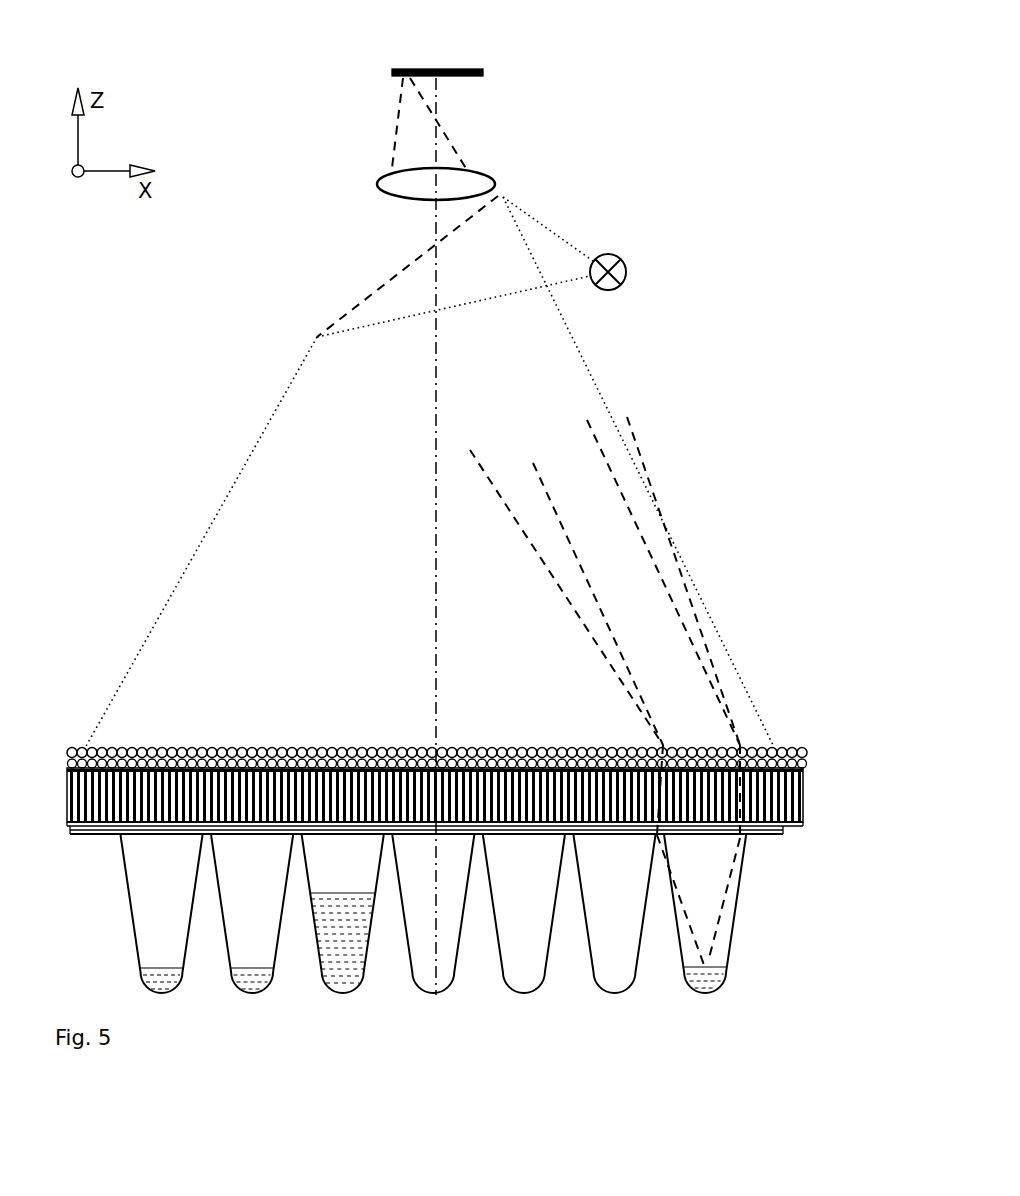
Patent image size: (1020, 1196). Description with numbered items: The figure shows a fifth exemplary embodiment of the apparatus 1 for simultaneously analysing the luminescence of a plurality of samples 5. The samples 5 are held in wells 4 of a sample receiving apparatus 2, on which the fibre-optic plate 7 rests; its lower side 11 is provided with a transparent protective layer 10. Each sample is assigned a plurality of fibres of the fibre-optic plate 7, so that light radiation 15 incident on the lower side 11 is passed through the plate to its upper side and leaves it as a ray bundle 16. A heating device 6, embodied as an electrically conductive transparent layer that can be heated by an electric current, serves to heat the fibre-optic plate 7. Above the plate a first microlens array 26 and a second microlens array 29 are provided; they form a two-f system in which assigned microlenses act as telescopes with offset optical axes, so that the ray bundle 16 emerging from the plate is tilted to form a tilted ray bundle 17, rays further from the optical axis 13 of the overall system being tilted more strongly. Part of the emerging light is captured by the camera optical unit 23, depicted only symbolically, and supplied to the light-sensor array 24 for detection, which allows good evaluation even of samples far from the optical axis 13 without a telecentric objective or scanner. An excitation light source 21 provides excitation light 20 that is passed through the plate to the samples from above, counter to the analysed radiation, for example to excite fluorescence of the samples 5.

The apparatus 1 is at (769, 42).
The sample receiving apparatus 2 is at (472, 914).
The wells 4 is at (718, 914).
The samples 5 is at (456, 953).
The heating device 6 is at (460, 828).
The fibre-optic plate 7 is at (460, 795).
The transparent protective layer 10 is at (465, 848).
The lower side 11 is at (461, 865).
The optical axis 13 is at (396, 536).
The light radiation 15 is at (724, 900).
The ray bundle 16 is at (661, 642).
The tilted ray bundle 17 is at (684, 626).
The excitation light 20 is at (429, 471).
The excitation light source 21 is at (650, 261).
The camera optical unit 23 is at (441, 207).
The light-sensor array 24 is at (473, 60).
The first microlens array 26 is at (466, 759).
The second microlens array 29 is at (463, 733).